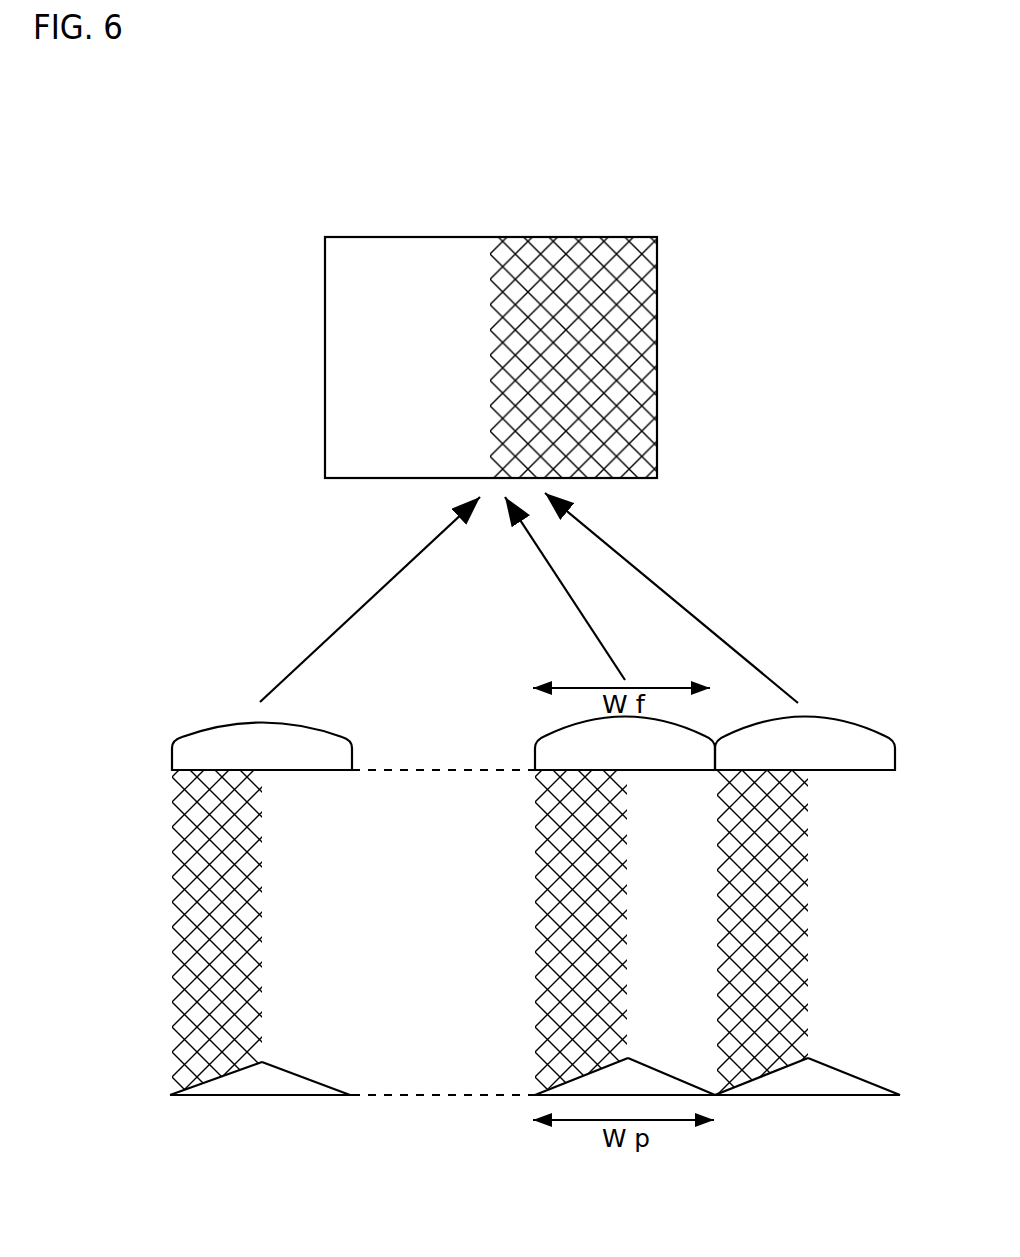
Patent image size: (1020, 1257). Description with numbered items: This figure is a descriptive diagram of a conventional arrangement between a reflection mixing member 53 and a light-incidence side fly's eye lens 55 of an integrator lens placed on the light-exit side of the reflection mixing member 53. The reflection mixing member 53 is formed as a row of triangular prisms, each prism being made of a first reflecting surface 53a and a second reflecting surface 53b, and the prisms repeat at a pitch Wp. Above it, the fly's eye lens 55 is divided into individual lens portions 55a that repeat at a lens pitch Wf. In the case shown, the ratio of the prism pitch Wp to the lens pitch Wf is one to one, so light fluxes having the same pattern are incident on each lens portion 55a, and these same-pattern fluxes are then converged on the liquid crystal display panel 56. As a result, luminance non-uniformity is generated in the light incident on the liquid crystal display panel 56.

The reflection mixing member 53 is at (506, 1111).
The first reflecting surface 53a is at (200, 1082).
The second reflecting surface 53b is at (303, 1073).
The light-incidence side fly's eye lens 55 is at (532, 697).
The lens portion 55a is at (322, 740).
The liquid crystal display panel 56 is at (342, 384).